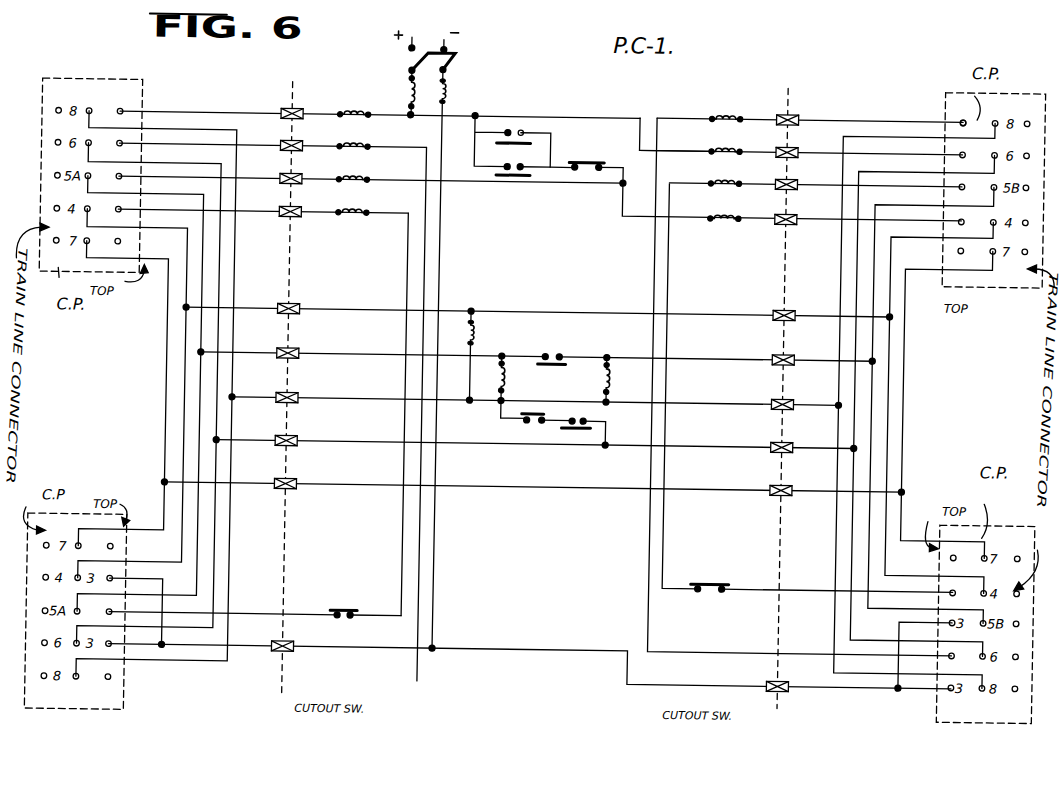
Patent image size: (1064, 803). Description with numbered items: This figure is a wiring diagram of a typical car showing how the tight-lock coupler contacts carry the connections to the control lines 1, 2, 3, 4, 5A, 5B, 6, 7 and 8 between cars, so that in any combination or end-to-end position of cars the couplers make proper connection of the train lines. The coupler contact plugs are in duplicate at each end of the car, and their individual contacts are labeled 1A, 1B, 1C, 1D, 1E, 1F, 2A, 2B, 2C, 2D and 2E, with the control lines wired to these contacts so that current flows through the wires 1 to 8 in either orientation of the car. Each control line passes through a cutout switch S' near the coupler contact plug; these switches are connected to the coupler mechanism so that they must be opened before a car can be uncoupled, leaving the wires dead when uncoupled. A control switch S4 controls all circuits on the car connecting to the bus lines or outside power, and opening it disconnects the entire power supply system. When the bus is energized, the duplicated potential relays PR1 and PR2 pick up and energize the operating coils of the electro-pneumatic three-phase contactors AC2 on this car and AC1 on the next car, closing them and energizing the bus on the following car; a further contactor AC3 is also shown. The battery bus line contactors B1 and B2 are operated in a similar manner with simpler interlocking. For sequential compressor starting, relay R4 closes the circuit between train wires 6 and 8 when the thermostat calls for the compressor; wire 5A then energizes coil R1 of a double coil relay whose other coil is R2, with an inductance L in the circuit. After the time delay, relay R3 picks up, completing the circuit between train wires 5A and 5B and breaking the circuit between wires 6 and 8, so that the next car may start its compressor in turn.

The coupler contact 1A is at (110, 111).
The train line connector terminal 1B is at (974, 155).
The train line connector terminal 1C is at (109, 143).
The train line connector terminal 1D is at (97, 676).
The train line connector terminal 1E is at (974, 123).
The train line connector terminal 1F is at (961, 656).
The train line connector terminal 2A is at (109, 176).
The train line connector terminal 2B is at (972, 222).
The train line connector terminal 2C is at (108, 209).
The train line connector terminal 2D is at (97, 611).
The train line connector terminal 2E is at (969, 390).
The control line 1 is at (542, 125).
The control line 2 is at (540, 191).
The control line 3 is at (530, 634).
The control line 4 is at (538, 303).
The train wire 5A is at (372, 345).
The train wire 5B is at (717, 353).
The train wire 6 is at (535, 437).
The control line 7 is at (533, 478).
The train wire 8 is at (535, 393).
The control switch S4 is at (464, 340).
The cutout switch S' is at (302, 103).
The battery bus line contactor B1 is at (354, 121).
The battery bus line contactor B2 is at (726, 126).
The contactor AC1 is at (353, 187).
The contactor AC2 is at (725, 192).
The contactor AC3 is at (535, 382).
The potential relay PR1 is at (512, 130).
The potential relay PR2 is at (513, 162).
The inductance coil L is at (479, 355).
The relay coil R1 is at (514, 387).
The relay coil R2 is at (620, 381).
The relay R3 is at (548, 380).
The relay R4 is at (583, 424).